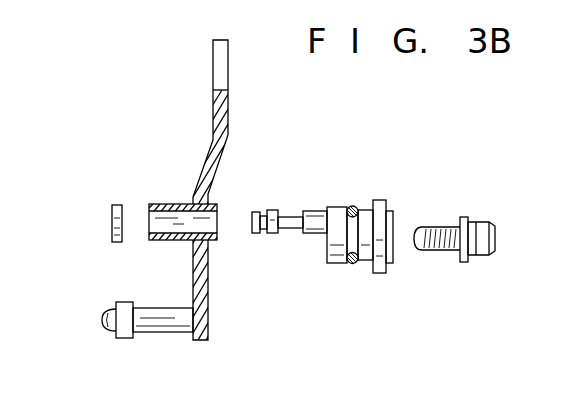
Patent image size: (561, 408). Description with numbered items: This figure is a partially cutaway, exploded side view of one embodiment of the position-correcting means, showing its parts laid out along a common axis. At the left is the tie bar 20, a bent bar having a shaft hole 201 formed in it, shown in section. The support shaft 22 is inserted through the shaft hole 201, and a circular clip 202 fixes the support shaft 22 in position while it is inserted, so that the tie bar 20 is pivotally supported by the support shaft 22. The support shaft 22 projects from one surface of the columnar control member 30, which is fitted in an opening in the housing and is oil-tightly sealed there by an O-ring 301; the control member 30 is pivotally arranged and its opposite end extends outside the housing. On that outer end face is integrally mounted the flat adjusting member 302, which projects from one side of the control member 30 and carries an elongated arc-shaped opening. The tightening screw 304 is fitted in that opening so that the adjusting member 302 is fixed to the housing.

The tie bar 20 is at (228, 118).
The shaft hole 201 is at (160, 220).
The circular clip 202 is at (118, 244).
The support shaft 22 is at (291, 216).
The control member 30 is at (338, 250).
The O-ring 301 is at (351, 206).
The adjusting member 302 is at (380, 222).
The tightening screw 304 is at (440, 252).